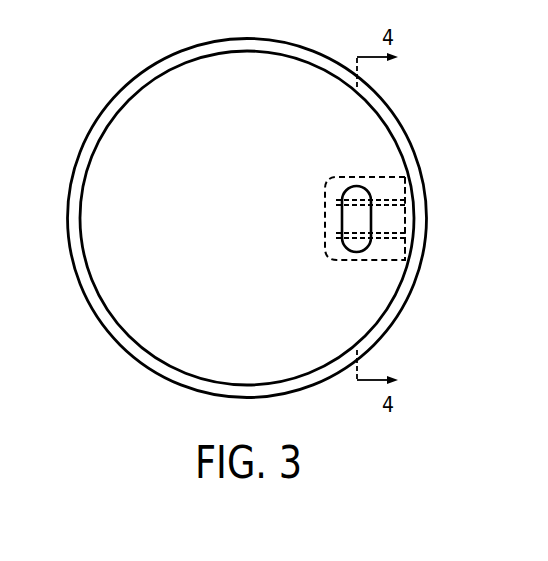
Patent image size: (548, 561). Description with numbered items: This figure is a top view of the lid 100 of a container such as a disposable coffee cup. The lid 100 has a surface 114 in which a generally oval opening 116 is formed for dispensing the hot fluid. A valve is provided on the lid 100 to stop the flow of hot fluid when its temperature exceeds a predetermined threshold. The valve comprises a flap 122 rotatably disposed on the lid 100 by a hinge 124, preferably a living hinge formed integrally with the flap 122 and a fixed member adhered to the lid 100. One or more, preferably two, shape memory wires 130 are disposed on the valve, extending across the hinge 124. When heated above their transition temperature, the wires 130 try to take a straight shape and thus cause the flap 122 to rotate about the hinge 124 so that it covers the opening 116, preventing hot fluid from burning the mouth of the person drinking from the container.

The lid 100 is at (97, 120).
The surface of the lid 114 is at (160, 102).
The opening 116 is at (372, 222).
The flap 122 is at (328, 213).
The hinge 124 is at (418, 222).
The shape memory wires 130 is at (380, 197).